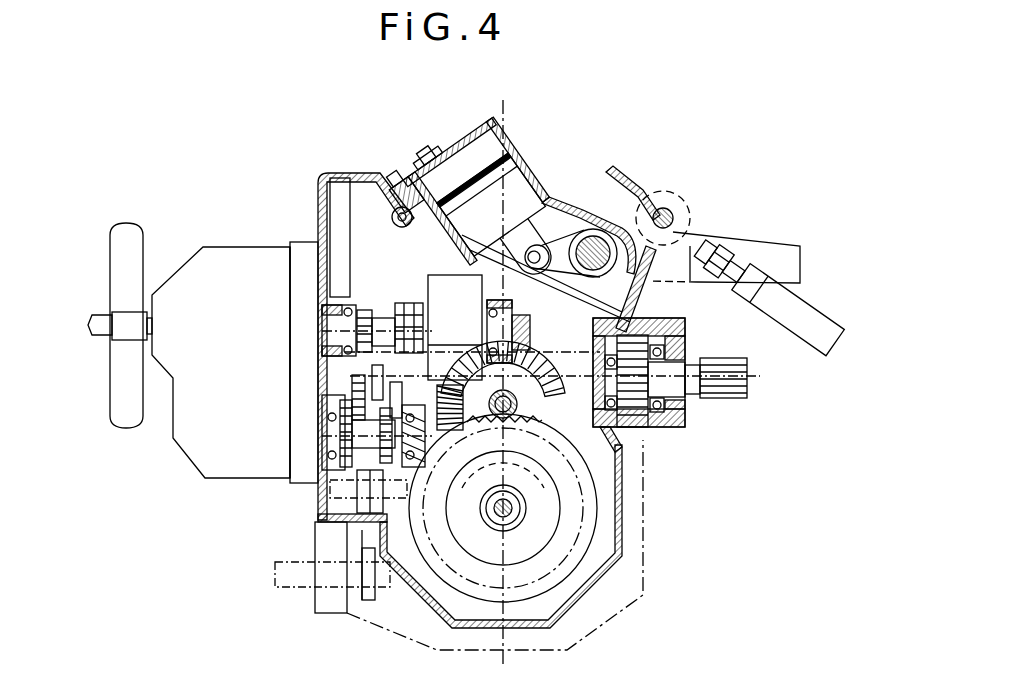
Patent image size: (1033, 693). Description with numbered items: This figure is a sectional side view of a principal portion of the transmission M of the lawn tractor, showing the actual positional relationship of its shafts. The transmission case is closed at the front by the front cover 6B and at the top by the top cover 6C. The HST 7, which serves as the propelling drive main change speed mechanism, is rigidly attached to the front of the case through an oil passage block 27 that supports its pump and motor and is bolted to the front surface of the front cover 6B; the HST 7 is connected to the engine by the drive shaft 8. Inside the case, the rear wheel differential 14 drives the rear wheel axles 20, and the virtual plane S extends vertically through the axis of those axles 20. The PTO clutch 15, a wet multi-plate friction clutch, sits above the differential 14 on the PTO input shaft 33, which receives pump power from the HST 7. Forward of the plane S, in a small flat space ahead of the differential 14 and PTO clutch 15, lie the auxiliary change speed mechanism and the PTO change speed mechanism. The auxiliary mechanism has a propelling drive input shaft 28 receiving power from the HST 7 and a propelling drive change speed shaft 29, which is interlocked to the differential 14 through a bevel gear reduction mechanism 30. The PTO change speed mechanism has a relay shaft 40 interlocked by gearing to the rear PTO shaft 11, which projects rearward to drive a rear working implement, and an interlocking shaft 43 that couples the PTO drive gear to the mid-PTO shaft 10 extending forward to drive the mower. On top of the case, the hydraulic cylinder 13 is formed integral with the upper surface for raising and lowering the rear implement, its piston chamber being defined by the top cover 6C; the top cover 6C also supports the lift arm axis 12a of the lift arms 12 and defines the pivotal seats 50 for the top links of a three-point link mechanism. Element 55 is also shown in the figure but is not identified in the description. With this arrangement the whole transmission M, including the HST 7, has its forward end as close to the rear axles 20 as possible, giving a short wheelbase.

The front cover 6B is at (316, 184).
The top cover 6C is at (470, 160).
The HST 7 is at (196, 238).
The drive shaft 8 is at (103, 337).
The mid-PTO shaft 10 is at (275, 578).
The rear PTO shaft 11 is at (731, 400).
The lift arms 12 is at (762, 243).
The lift arm axis 12a is at (593, 245).
The hydraulic cylinder 13 is at (530, 152).
The rear wheel differential 14 is at (606, 506).
The PTO clutch 15 is at (443, 282).
The rear wheel axles 20 is at (513, 518).
The oil passage block 27 is at (292, 457).
The propelling drive input shaft 28 is at (430, 443).
The propelling drive change speed shaft 29 is at (455, 352).
The bevel gear reduction mechanism 30 is at (536, 334).
The PTO input shaft 33 is at (387, 322).
The relay shaft 40 is at (566, 348).
The interlocking shaft 43 is at (330, 500).
The pivotal seats 50 is at (678, 195).
The starter assembly 55 is at (771, 338).
The virtual plane S is at (504, 368).
The transmission M is at (656, 572).